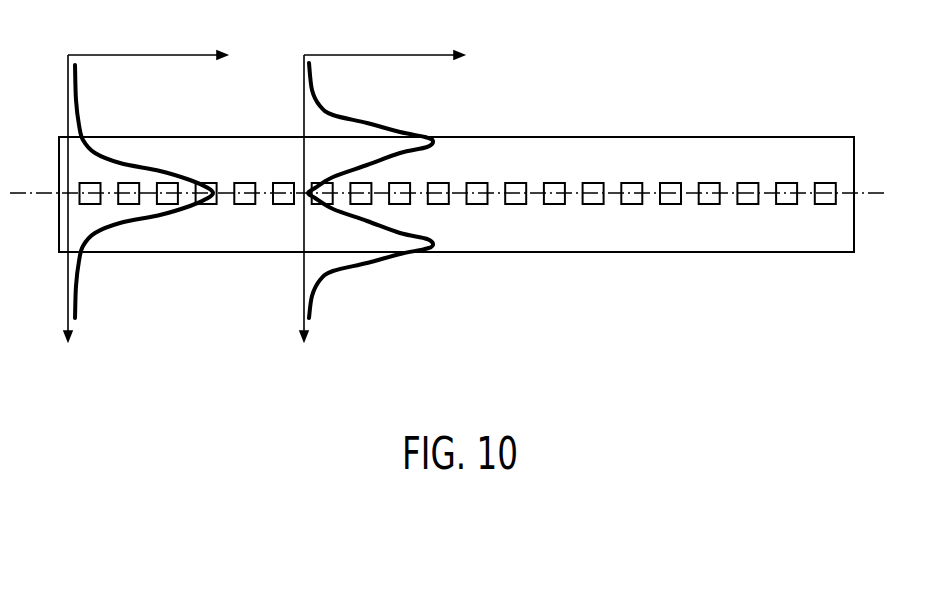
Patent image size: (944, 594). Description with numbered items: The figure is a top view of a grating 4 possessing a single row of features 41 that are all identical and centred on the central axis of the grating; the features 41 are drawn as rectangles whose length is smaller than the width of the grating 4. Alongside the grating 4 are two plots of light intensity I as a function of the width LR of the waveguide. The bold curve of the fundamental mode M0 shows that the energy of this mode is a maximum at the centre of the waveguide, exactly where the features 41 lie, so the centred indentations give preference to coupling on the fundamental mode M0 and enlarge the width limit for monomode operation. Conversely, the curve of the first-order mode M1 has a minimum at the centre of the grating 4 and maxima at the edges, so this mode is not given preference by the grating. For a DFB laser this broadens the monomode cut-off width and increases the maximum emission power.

The grating 4 is at (714, 143).
The feature 41 is at (598, 185).
The fundamental mode M0 is at (143, 219).
The 1st-order mode M1 is at (392, 258).
The width of the waveguide LR is at (190, 213).
The light intensity I is at (271, 55).